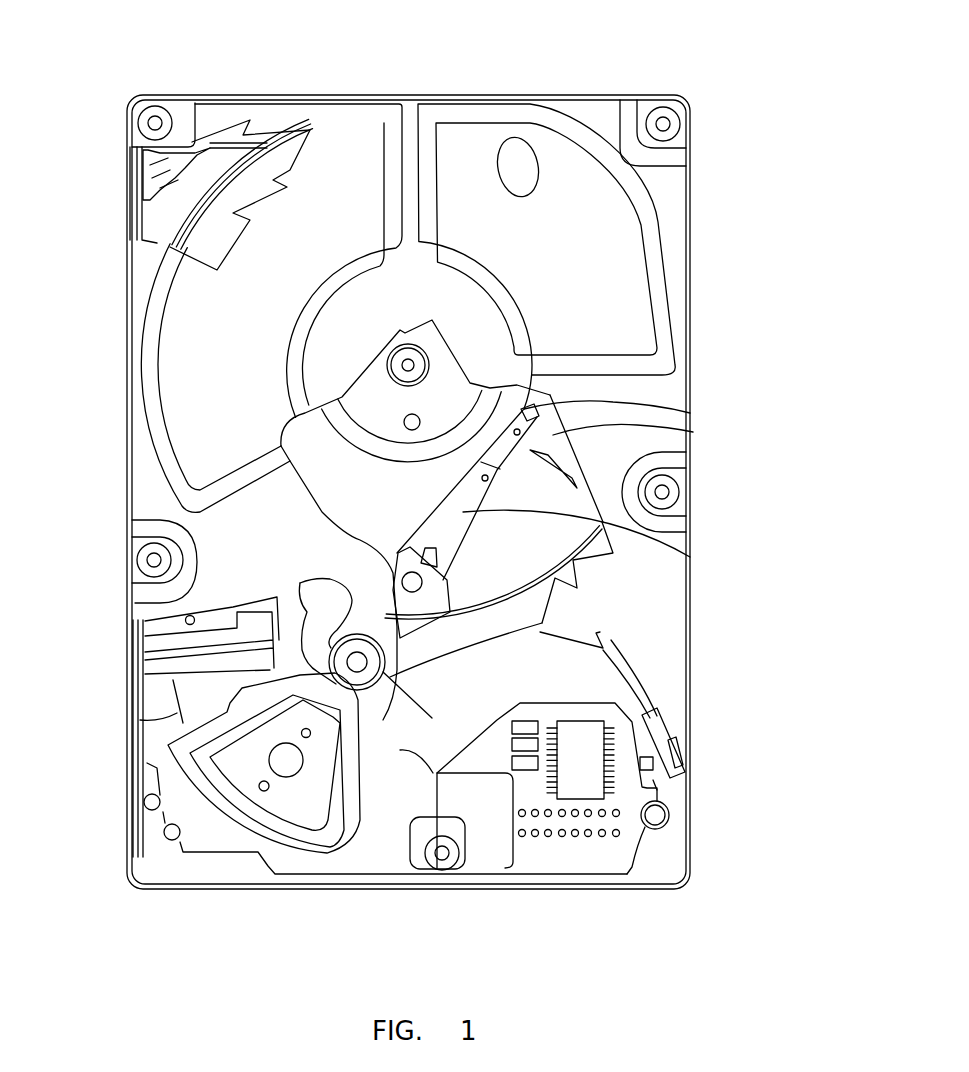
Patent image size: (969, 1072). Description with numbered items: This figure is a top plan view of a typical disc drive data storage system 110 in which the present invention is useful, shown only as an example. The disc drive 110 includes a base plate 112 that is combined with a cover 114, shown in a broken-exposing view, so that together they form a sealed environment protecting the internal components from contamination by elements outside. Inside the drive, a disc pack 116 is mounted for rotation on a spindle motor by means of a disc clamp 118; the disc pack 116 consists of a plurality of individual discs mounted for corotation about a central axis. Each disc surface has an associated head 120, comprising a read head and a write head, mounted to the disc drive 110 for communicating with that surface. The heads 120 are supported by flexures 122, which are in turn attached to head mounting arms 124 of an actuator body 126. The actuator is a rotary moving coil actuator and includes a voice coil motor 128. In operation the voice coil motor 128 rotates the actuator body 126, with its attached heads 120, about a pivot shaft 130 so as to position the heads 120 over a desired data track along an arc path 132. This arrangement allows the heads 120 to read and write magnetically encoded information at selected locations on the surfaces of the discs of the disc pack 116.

The disc drive data storage system 110 is at (117, 457).
The base plate 112 is at (690, 813).
The cover 114 is at (412, 107).
The disc pack 116 is at (575, 576).
The disc clamp 118 is at (443, 382).
The head 120 is at (690, 413).
The flexure 122 is at (690, 557).
The head mounting arm 124 is at (542, 623).
The actuator body 126 is at (327, 620).
The voice coil motor 128 is at (143, 737).
The pivot shaft 130 is at (400, 690).
The arc path 132 is at (693, 432).